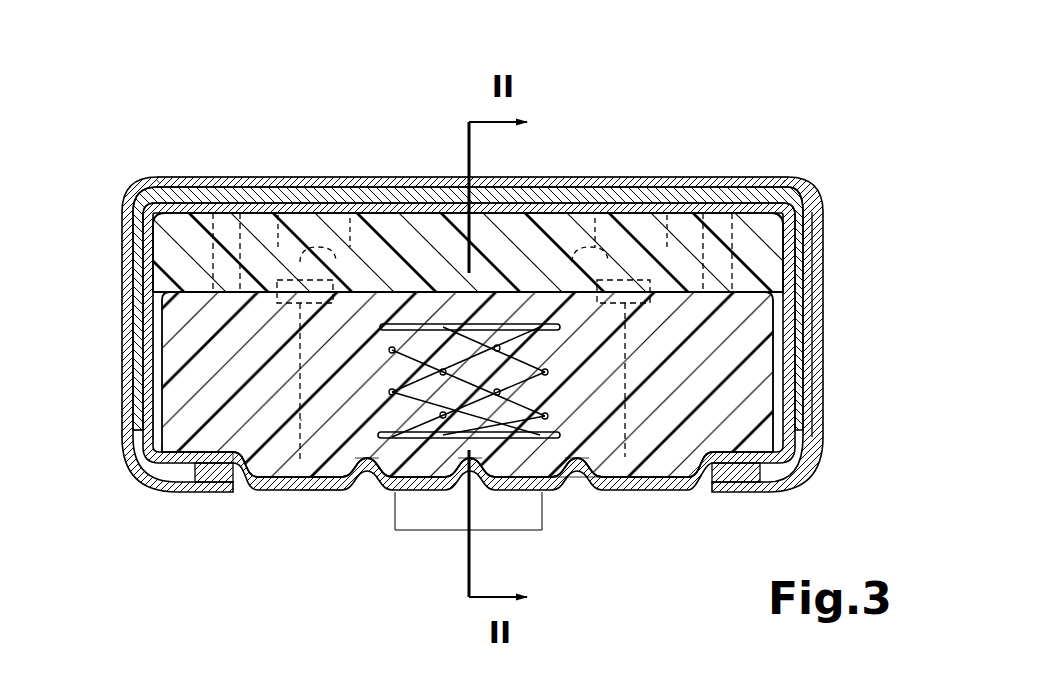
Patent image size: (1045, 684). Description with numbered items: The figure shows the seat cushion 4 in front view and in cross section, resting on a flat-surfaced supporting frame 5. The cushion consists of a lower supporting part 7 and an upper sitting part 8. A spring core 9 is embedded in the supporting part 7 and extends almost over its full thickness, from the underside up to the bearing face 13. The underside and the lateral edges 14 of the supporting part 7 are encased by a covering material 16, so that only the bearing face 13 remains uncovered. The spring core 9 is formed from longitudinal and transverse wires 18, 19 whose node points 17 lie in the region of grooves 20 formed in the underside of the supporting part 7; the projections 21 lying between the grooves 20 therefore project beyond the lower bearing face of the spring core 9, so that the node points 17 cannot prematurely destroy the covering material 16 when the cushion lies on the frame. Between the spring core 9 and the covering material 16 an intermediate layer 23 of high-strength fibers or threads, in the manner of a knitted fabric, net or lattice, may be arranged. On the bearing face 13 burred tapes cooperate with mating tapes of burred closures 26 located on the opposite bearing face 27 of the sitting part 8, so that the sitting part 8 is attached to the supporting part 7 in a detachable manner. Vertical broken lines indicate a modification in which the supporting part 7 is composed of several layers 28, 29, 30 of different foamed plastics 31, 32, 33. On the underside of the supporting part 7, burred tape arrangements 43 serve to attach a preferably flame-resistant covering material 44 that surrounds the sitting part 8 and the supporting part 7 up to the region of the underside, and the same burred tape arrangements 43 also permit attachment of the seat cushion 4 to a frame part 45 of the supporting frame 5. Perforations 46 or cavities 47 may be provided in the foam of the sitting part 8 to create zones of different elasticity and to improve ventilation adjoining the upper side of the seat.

The seat cushion 4 is at (640, 160).
The supporting frame 5 is at (437, 535).
The supporting part 7 is at (643, 452).
The sitting part 8 is at (490, 240).
The spring core 9 is at (505, 318).
The bearing face 13 is at (393, 290).
The lateral edges 14 is at (160, 318).
The covering material 16 is at (685, 493).
The node points 17 is at (390, 452).
The longitudinal wires 18 is at (500, 455).
The transverse wires 19 is at (585, 465).
The grooves 20 is at (352, 533).
The projections 21 is at (338, 495).
The intermediate layer 23 is at (263, 478).
The burred closures 26 is at (283, 262).
The bearing face 27 is at (148, 298).
The layer 28 is at (193, 425).
The layer 29 is at (313, 418).
The layer 30 is at (755, 338).
The foamed plastic 31 is at (150, 458).
The foamed plastic 32 is at (600, 393).
The foamed plastic 33 is at (747, 381).
The burred tape arrangements 43 is at (215, 497).
The flame-resistant covering material 44 is at (205, 180).
The frame part 45 is at (530, 518).
The perforations 46 is at (195, 203).
The cavities 47 is at (341, 243).